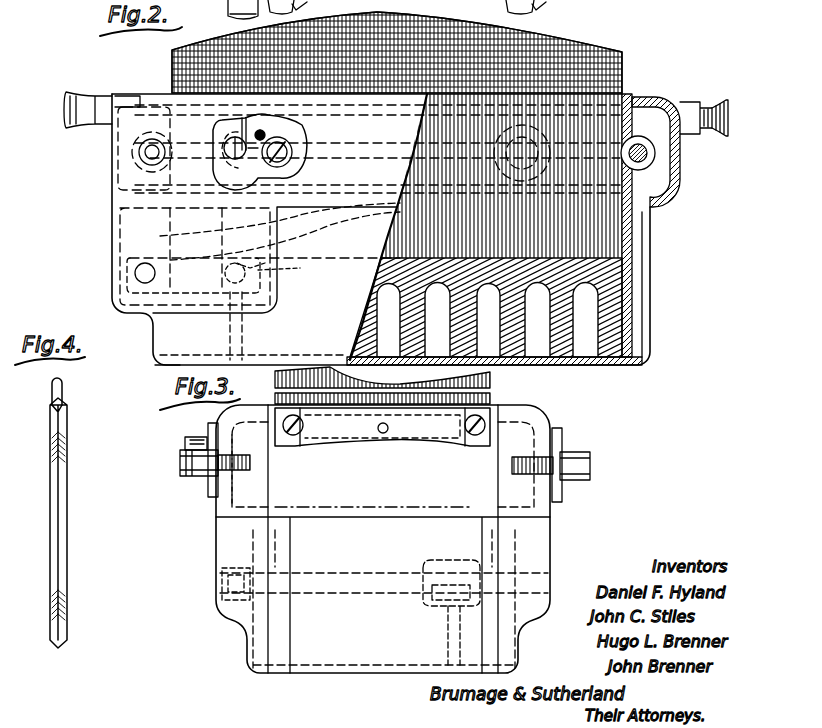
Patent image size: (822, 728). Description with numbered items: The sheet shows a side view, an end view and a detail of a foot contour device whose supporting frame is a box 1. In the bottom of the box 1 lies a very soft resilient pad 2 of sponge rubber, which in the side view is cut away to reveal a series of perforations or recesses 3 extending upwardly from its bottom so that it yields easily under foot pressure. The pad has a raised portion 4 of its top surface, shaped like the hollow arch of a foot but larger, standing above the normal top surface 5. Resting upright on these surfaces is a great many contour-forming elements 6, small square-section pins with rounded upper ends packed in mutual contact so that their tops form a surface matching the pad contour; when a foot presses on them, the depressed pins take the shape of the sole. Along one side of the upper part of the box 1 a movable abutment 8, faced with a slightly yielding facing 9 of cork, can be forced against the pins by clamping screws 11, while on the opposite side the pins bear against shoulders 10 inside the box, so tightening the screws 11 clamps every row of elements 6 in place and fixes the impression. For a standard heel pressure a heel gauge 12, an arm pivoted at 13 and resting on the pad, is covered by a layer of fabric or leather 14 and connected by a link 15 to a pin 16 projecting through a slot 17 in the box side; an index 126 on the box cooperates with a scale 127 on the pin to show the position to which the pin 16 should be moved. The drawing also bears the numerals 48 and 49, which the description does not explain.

In FIG. 2, the box 1 is at (645, 272).
In FIG. 2, the resilient pad 2 is at (551, 365).
In FIG. 3, the resilient pad 2 is at (340, 676).
In FIG. 2, the perforations or recesses 3 is at (494, 370).
In FIG. 2, the raised portion of the top surface 4 is at (332, 222).
In FIG. 2, the normal top surface of the pad 5 is at (320, 264).
In FIG. 2, the contour-forming elements 6 is at (397, 135).
In FIG. 4, the contour-forming elements 6 is at (64, 500).
In FIG. 3, the movable abutment 8 is at (276, 504).
In FIG. 3, the yielding facing 9 is at (280, 480).
In FIG. 3, the shoulders 10 is at (482, 446).
In FIG. 3, the clamping screws 11 is at (190, 470).
In FIG. 2, the heel gauge 12 is at (215, 310).
In FIG. 3, the heel gauge 12 is at (447, 570).
In FIG. 2, the pivot 13 is at (150, 283).
In FIG. 2, the layer of fabric or leather 14 is at (270, 270).
In FIG. 2, the link 15 is at (222, 224).
In FIG. 2, the pin 16 is at (225, 152).
In FIG. 2, the slot 17 is at (222, 128).
In FIG. 2, the base frame 48 is at (172, 365).
In FIG. 3, the base frame 48 is at (300, 673).
In FIG. 3, the mounting lug 49 is at (250, 552).
In FIG. 2, the index 126 is at (268, 136).
In FIG. 3, the index 126 is at (208, 438).
In FIG. 2, the scale 127 is at (252, 124).
In FIG. 3, the scale 127 is at (185, 438).